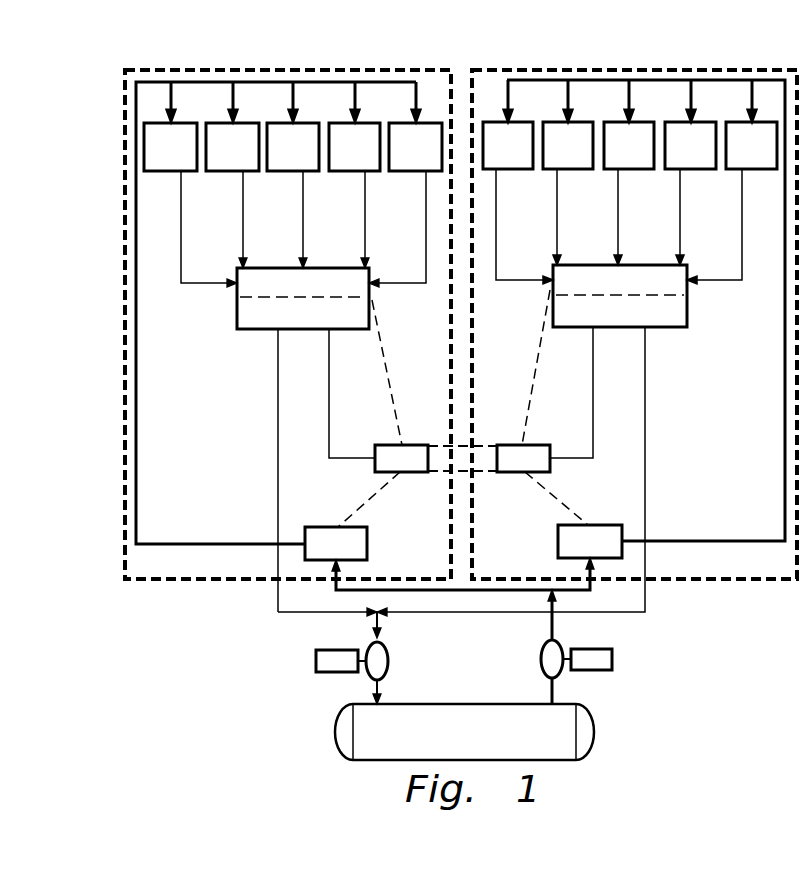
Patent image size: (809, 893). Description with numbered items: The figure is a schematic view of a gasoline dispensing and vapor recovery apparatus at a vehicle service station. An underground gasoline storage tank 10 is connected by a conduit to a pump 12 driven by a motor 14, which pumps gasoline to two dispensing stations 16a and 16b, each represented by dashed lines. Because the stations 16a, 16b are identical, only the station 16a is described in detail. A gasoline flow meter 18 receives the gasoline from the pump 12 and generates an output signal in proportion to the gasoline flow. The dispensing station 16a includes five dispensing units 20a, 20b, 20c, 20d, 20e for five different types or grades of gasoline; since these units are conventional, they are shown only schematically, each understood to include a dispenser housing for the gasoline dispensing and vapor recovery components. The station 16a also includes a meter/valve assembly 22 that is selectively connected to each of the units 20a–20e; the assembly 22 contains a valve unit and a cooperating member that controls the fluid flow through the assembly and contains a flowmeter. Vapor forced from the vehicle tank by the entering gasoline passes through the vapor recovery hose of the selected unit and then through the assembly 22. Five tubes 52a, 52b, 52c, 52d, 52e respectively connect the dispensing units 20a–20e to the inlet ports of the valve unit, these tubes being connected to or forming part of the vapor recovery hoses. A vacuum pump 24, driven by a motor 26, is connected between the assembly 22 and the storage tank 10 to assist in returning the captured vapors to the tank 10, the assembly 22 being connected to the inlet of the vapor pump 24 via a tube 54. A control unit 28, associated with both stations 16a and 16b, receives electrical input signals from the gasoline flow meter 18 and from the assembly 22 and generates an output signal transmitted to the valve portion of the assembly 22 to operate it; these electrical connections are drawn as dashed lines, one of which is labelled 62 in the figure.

The underground gasoline storage tank 10 is at (482, 743).
The pump 12 is at (540, 665).
The motor 14 is at (614, 660).
The dispensing station 16a is at (265, 70).
The dispensing station 16b is at (620, 70).
The gasoline flow meter 18 is at (368, 540).
The dispensing unit 20a is at (189, 158).
The dispensing unit 20b is at (251, 158).
The dispensing unit 20c is at (312, 158).
The dispensing unit 20d is at (373, 158).
The dispensing unit 20e is at (434, 158).
The meter/valve assembly 22 is at (257, 330).
The vacuum pump 24 is at (390, 668).
The motor 26 is at (314, 660).
The control unit 28 is at (417, 473).
The tube 52a is at (202, 285).
The tube 52b is at (237, 193).
The tube 52c is at (298, 193).
The tube 52d is at (360, 193).
The tube 52e is at (405, 283).
The tube 54 is at (277, 447).
The data link 62 is at (388, 383).